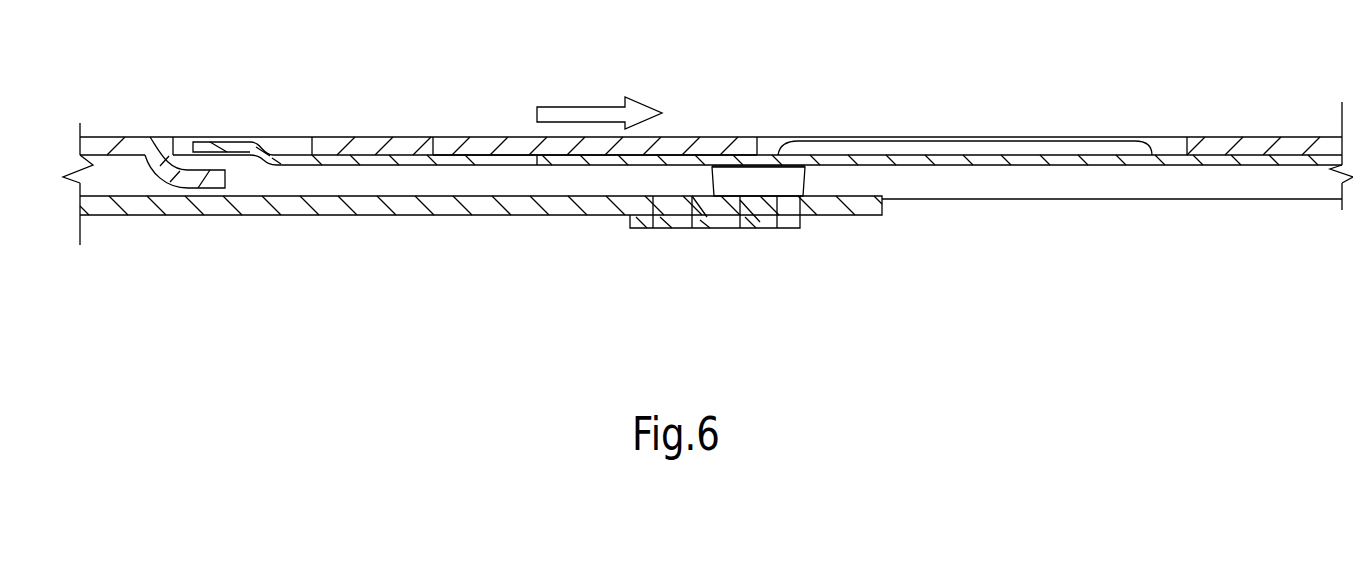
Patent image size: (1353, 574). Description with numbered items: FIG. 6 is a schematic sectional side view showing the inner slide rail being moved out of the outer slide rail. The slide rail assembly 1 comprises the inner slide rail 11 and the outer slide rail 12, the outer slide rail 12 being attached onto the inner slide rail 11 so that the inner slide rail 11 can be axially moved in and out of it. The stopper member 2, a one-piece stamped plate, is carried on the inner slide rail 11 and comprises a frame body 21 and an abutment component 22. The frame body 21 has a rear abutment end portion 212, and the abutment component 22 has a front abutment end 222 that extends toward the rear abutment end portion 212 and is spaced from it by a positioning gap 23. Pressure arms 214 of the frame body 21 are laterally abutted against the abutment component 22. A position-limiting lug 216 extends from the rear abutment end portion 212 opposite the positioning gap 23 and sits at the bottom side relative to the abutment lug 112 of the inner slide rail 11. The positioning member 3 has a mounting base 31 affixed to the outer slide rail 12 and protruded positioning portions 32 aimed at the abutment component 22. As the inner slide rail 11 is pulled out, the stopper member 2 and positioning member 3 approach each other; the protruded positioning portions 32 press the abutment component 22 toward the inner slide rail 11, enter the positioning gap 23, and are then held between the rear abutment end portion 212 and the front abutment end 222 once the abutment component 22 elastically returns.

The slide rail assembly 1 is at (722, 134).
The inner slide rail 11 is at (518, 147).
The abutment lug 112 is at (208, 180).
The outer slide rail 12 is at (412, 210).
The stopper member 2 is at (1117, 169).
The frame body 21 is at (353, 165).
The rear abutment end portion 212 is at (385, 158).
The pressure arms 214 is at (942, 147).
The position-limiting lug 216 is at (230, 146).
The abutment component 22 is at (1009, 169).
The front abutment end 222 is at (582, 158).
The positioning gap 23 is at (463, 162).
The positioning member 3 is at (711, 229).
The mounting base 31 is at (722, 224).
The protruded positioning portions 32 is at (787, 180).